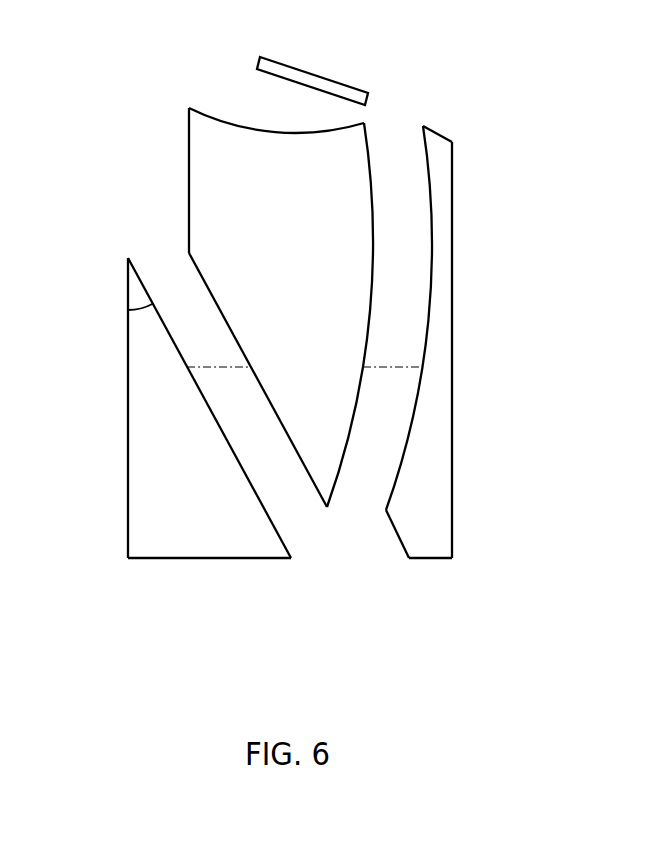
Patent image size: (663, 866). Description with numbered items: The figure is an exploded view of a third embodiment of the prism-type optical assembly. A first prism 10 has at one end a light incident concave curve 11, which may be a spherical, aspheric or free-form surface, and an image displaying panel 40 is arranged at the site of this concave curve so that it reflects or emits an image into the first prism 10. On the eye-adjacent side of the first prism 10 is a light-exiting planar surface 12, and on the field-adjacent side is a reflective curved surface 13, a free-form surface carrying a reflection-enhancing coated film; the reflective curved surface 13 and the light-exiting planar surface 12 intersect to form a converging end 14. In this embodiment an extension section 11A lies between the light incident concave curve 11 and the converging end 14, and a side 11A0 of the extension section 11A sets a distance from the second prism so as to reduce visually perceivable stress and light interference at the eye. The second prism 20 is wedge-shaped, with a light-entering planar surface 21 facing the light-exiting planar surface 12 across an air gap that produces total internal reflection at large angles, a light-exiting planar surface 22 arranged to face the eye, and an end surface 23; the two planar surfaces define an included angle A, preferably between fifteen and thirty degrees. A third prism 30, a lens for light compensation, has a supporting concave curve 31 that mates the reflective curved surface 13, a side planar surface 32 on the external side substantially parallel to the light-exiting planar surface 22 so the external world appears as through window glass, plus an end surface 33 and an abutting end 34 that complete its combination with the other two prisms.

The first prism 10 is at (275, 270).
The light incident concave curve 11 is at (236, 123).
The extension section 11A is at (283, 199).
The side of the extension section 11A0 is at (189, 210).
The light-exiting planar surface 12 is at (213, 297).
The reflective curved surface 13 is at (372, 162).
The converging end 14 is at (350, 428).
The second prism 20 is at (174, 439).
The light-entering planar surface 21 is at (243, 465).
The light-exiting planar surface 22 is at (127, 393).
The end surface 23 is at (207, 559).
The third prism 30 is at (439, 372).
The supporting concave curve 31 is at (430, 212).
The side planar surface 32 is at (453, 305).
The end surface 33 is at (432, 559).
The abutting end 34 is at (404, 545).
The image displaying panel 40 is at (312, 72).
The included angle A is at (140, 320).